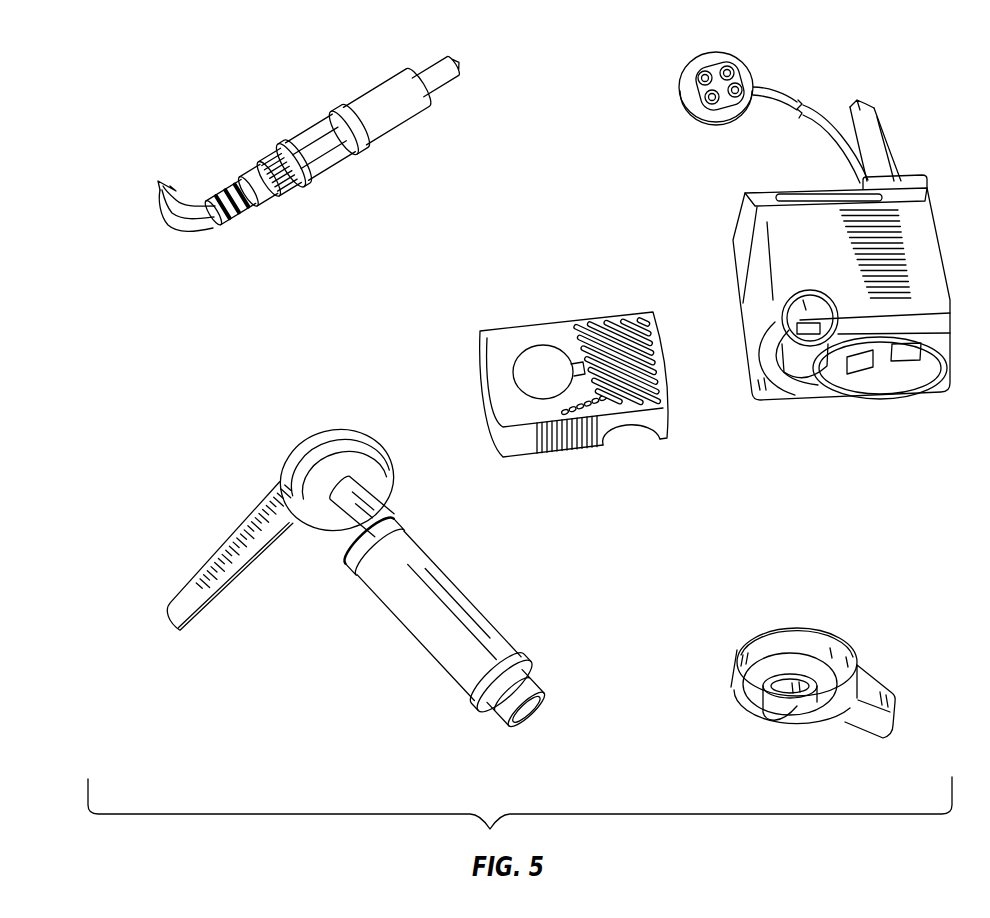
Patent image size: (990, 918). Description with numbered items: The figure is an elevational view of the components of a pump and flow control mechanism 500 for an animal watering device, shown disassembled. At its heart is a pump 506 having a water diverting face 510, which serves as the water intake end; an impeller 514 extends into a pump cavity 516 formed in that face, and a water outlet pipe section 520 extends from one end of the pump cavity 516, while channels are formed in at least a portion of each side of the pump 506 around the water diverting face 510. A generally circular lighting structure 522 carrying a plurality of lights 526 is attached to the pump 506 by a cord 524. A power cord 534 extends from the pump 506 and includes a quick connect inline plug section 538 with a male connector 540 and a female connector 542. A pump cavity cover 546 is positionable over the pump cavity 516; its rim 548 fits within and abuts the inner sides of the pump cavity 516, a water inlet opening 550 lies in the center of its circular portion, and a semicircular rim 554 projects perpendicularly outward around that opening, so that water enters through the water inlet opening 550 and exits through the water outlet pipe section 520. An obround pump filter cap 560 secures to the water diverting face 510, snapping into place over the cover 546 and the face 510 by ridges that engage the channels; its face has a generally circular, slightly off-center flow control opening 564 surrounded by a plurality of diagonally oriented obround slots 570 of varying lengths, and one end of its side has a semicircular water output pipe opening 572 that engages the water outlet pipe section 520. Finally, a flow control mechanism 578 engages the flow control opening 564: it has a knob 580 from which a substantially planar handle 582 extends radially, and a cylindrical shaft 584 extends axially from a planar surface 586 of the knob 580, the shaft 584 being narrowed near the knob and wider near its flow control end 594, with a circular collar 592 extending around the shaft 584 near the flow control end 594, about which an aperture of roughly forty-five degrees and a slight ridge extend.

The pump and flow control mechanism 500 is at (607, 107).
The pump 506 is at (812, 230).
The water diverting face 510 is at (777, 403).
The impeller 514 is at (900, 354).
The pump cavity 516 is at (870, 387).
The water outlet pipe section 520 is at (795, 305).
The lighting structure 522 is at (720, 57).
The cord 524 is at (781, 94).
The lights 526 is at (708, 100).
The power cord 534 is at (430, 55).
The quick connect inline plug section 538 is at (424, 162).
The male connector 540 is at (303, 197).
The female connector 542 is at (345, 190).
The pump cavity cover 546 is at (742, 660).
The rim 548 is at (813, 640).
The water inlet opening 550 is at (797, 703).
The semicircular rim 554 is at (808, 687).
The obround pump filter cap 560 is at (604, 333).
The flow control opening 564 is at (547, 373).
The obround slots 570 is at (623, 386).
The water output pipe opening 572 is at (637, 433).
The flow control mechanism 578 is at (430, 533).
The knob 580 is at (327, 437).
The handle 582 is at (237, 537).
The cylindrical shaft 584 is at (493, 647).
The planar surface 586 is at (313, 507).
The circular collar 592 is at (487, 702).
The flow control end 594 is at (527, 720).